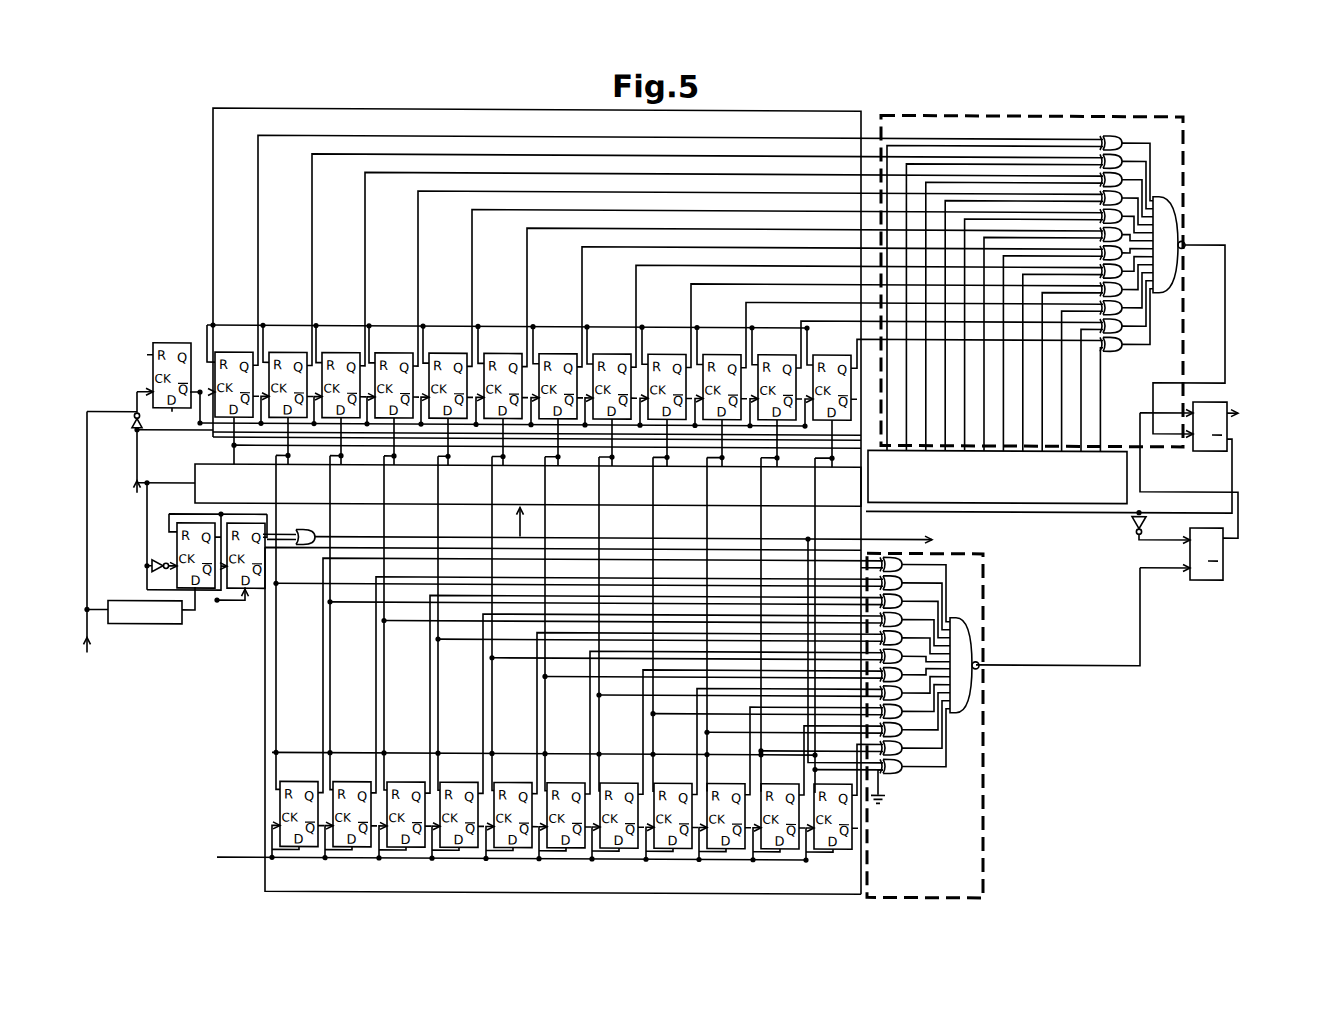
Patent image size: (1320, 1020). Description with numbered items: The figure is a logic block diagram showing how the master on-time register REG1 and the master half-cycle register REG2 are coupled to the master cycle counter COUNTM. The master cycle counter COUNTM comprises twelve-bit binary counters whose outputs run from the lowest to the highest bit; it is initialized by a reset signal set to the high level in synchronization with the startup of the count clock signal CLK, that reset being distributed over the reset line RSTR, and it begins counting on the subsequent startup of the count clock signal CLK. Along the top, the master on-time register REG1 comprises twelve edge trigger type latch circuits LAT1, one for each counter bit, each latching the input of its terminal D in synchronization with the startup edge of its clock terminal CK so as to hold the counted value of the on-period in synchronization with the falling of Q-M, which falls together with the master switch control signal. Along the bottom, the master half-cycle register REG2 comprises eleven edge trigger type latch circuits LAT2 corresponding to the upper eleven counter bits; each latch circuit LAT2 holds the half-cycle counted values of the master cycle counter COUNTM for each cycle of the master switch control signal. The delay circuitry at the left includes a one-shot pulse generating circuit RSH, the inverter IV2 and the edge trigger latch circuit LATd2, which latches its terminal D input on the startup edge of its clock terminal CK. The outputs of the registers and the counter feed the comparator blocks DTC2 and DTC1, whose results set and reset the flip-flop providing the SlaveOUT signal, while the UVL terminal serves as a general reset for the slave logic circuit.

The master on-time register REG1 is at (650, 502).
The latch circuit LAT1 is at (229, 354).
The Q-M signal Q-M is at (205, 316).
The general reset terminal UVL is at (278, 752).
The inverter IV2 is at (143, 423).
The count clock signal CLK is at (136, 436).
The master cycle counter COUNTM is at (200, 459).
The digital comparator DTC2 is at (1033, 283).
The slave output SlaveOUT is at (1093, 488).
The reset signal line RSTR is at (646, 646).
The one-shot pulse generating circuit RSH is at (133, 629).
The latch circuit LATd2 is at (238, 589).
The master half-cycle register REG2 is at (519, 699).
The latch circuit LAT2 is at (281, 808).
The digital comparator DTC1 is at (925, 725).